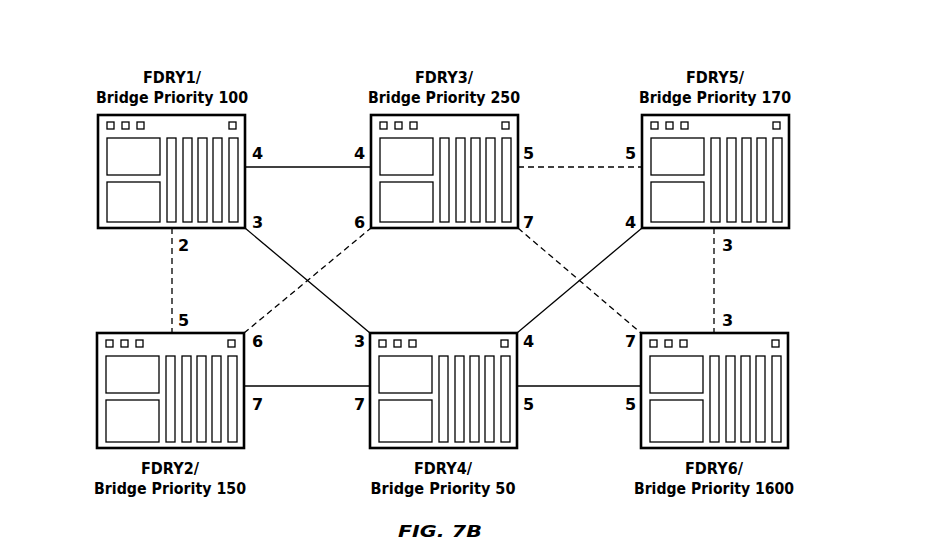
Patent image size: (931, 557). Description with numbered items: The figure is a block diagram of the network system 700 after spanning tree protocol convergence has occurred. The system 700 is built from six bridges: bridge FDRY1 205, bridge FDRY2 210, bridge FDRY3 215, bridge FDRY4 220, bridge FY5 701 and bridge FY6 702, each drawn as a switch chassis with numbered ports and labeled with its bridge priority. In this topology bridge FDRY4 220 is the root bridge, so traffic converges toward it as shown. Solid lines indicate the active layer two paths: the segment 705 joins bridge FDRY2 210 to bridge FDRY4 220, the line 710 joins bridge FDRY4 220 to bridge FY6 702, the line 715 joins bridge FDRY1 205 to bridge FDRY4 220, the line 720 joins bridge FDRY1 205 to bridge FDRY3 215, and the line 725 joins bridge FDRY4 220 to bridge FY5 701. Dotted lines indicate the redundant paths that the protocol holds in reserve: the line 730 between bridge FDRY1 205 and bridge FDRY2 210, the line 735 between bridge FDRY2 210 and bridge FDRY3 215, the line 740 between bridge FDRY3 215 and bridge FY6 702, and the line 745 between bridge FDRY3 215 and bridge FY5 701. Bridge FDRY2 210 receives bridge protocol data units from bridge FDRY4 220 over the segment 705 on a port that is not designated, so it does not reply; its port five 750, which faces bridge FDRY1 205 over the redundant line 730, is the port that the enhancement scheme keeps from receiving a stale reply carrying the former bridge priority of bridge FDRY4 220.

The network system 700 is at (94, 41).
The bridge FDRY1 205 is at (98, 171).
The bridge FDRY2 210 is at (97, 393).
The bridge FDRY3 215 is at (455, 229).
The bridge FDRY4 220 is at (423, 332).
The bridge FY5 701 is at (788, 171).
The bridge FY6 702 is at (788, 393).
The segment 705 is at (305, 387).
The active L2 path line 710 is at (572, 388).
The active L2 path line 715 is at (345, 318).
The active L2 path line 720 is at (306, 167).
The active L2 path line 725 is at (540, 315).
The redundant path line 730 is at (170, 278).
The redundant path line 735 is at (345, 250).
The redundant path line 740 is at (545, 250).
The redundant path line 745 is at (578, 167).
The port 5 750 is at (716, 277).